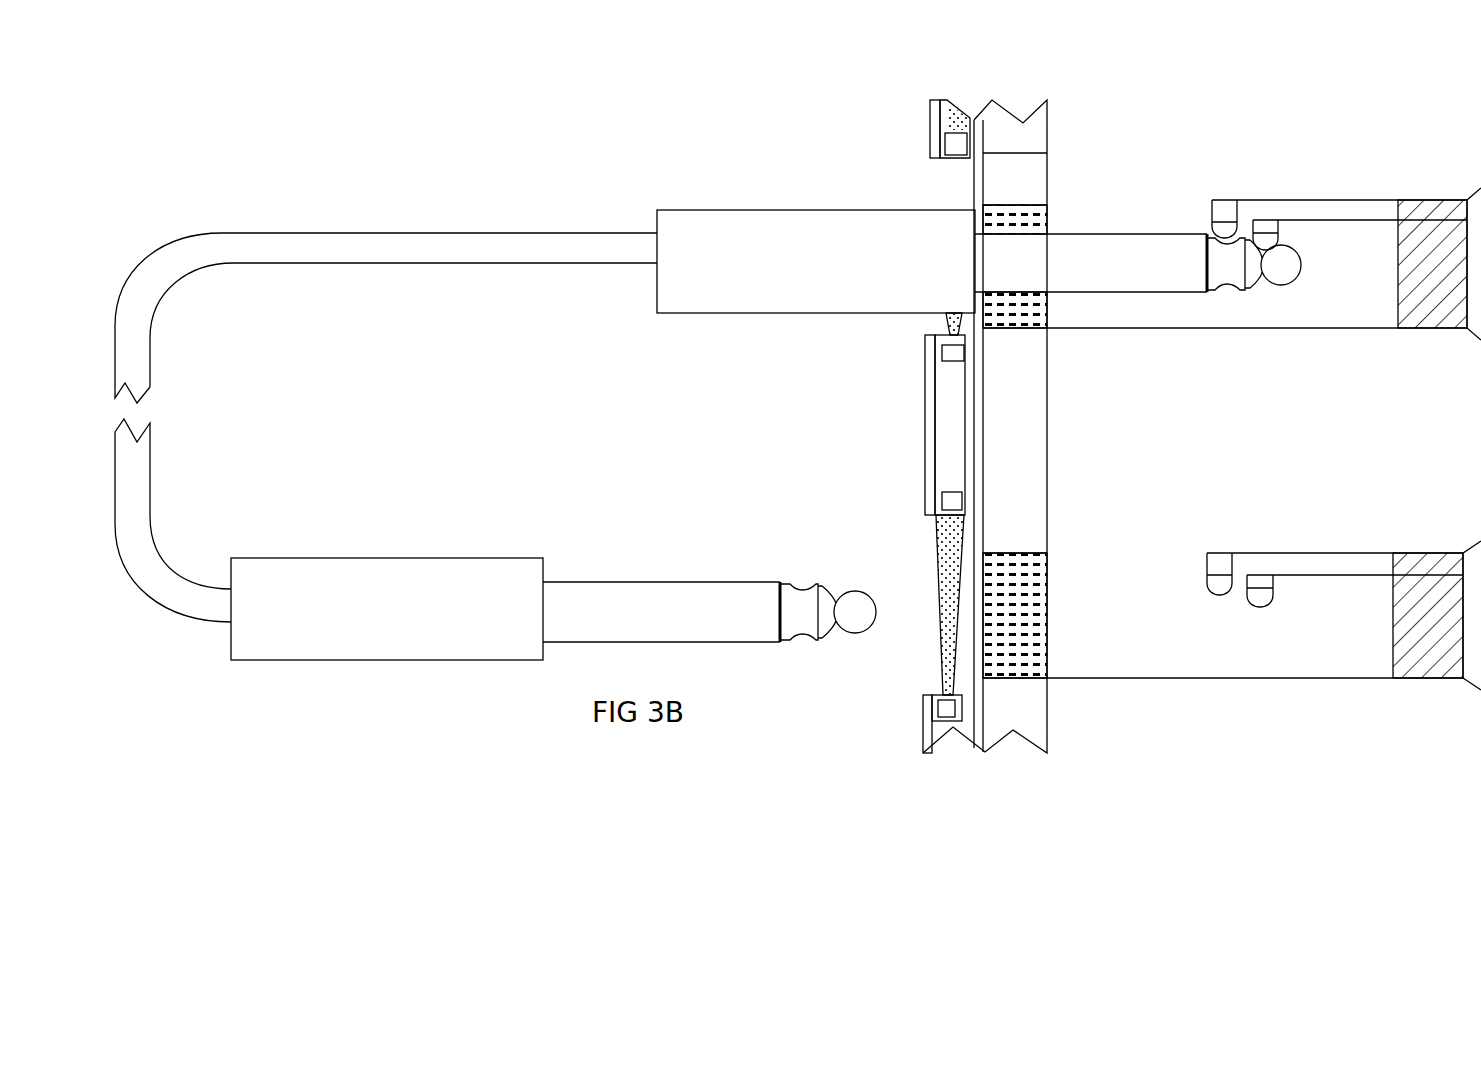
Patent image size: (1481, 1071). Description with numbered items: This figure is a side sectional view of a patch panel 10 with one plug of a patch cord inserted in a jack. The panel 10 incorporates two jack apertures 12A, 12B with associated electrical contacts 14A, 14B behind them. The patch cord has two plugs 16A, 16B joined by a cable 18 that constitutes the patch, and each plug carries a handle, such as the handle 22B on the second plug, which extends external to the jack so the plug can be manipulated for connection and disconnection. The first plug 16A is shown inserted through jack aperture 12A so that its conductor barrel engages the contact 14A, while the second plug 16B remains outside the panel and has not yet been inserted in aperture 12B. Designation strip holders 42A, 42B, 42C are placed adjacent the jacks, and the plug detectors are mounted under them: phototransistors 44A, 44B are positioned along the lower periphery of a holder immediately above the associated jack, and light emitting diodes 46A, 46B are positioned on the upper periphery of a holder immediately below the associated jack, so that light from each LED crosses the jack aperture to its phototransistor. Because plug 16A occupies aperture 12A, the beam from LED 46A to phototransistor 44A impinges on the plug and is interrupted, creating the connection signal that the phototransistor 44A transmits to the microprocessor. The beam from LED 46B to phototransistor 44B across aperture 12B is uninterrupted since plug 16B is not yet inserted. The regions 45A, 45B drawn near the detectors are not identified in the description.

The patch panel 10 is at (978, 357).
The jack aperture 12A is at (1040, 215).
The jack aperture 12B is at (1020, 590).
The electrical contact 14A is at (1348, 193).
The electrical contact 14B is at (1342, 546).
The plug 16A is at (685, 320).
The plug 16B is at (488, 553).
The cable 18 is at (128, 477).
The handle 22B is at (1003, 427).
The designation strip holder 42A is at (942, 102).
The designation strip holder 42B is at (930, 412).
The designation strip holder 42C is at (918, 742).
The phototransistor 44A is at (933, 128).
The phototransistor 44B is at (945, 502).
The wedge 45A is at (940, 323).
The wedge 45B is at (943, 618).
The light emitting diode 46A is at (945, 350).
The light emitting diode 46B is at (950, 707).